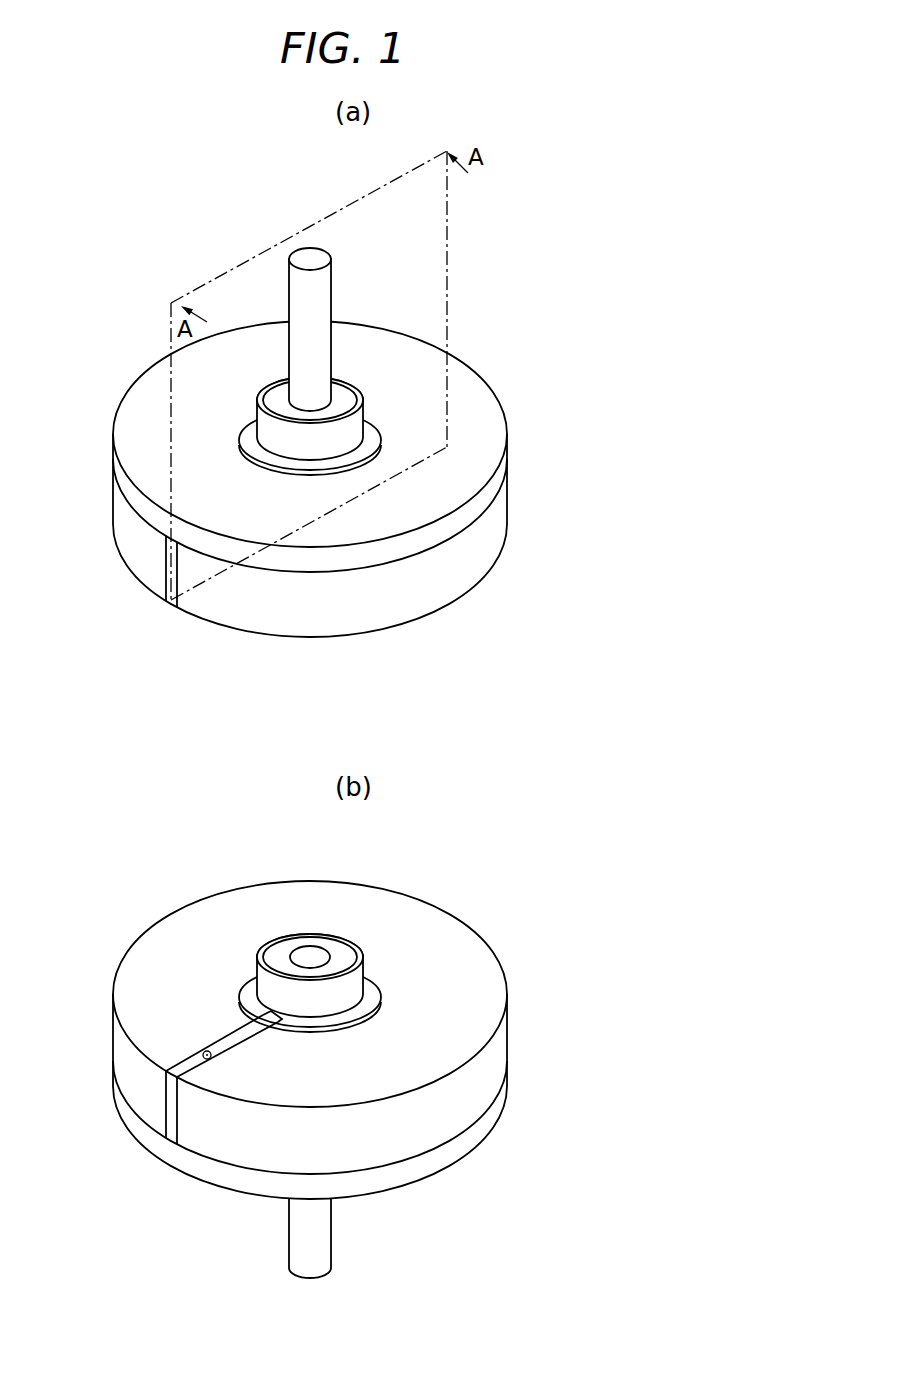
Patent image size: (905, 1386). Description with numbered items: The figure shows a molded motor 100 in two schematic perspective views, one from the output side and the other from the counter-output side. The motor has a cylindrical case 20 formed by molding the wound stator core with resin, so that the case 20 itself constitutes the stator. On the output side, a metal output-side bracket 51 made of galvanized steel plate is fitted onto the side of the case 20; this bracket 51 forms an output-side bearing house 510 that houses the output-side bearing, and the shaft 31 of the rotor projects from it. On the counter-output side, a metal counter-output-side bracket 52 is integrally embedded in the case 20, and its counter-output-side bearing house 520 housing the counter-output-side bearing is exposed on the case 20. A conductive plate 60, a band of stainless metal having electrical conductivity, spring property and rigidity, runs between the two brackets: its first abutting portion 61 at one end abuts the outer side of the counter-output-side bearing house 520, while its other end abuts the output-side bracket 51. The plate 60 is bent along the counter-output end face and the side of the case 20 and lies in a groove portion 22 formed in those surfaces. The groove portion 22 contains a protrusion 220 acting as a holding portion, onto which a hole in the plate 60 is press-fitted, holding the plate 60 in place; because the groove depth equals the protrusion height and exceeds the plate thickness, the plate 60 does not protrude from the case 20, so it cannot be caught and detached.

The molded motor 100 is at (553, 388).
The case 20 is at (493, 530).
The output-side bracket 51 is at (478, 453).
The output-side bearing house 510 is at (350, 437).
The shaft 31 is at (318, 284).
The conductive plate 60 is at (146, 572).
The counter-output-side bracket 52 is at (399, 954).
The counter-output-side bearing house 520 is at (338, 946).
The first abutting portion 61 is at (262, 1014).
The groove portion 22 is at (187, 1067).
The protrusion 220 is at (211, 1058).